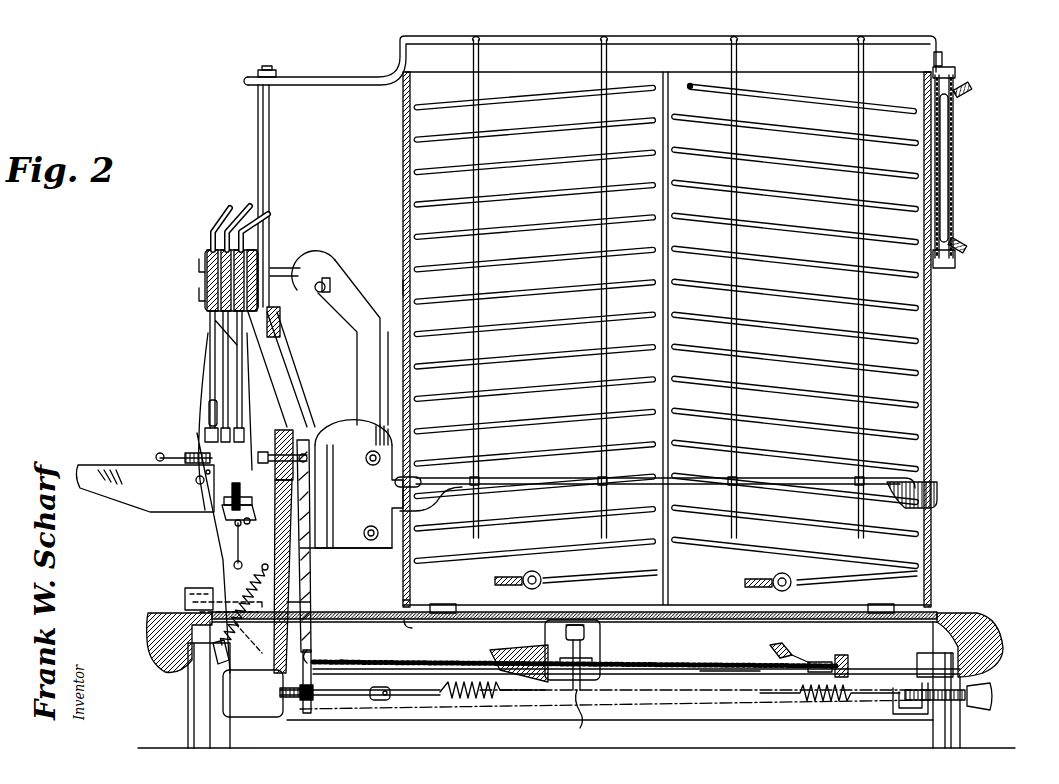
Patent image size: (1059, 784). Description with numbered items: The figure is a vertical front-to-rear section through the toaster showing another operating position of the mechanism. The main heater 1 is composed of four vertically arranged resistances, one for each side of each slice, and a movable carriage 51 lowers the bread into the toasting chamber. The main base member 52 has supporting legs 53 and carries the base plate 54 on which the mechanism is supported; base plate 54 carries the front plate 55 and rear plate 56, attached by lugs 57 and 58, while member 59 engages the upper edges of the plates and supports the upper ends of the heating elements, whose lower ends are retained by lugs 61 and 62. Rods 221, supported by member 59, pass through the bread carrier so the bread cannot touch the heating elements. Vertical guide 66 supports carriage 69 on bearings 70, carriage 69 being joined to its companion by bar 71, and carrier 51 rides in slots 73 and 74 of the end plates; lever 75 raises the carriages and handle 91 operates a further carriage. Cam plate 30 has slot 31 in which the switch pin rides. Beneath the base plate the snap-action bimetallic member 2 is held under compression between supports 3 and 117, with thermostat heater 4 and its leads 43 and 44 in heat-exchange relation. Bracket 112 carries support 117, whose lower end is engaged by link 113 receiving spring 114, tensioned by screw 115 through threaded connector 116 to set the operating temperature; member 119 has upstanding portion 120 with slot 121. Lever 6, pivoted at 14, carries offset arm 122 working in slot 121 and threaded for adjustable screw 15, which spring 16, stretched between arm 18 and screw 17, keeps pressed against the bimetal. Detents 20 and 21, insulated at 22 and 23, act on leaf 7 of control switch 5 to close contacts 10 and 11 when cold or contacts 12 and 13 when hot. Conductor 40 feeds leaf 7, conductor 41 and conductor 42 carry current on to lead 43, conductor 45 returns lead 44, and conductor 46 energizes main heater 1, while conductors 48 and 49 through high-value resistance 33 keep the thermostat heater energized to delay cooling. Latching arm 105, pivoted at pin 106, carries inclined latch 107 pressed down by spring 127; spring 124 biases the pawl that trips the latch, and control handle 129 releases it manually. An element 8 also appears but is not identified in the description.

The main heater 1 is at (906, 343).
The bimetallic member 2 is at (688, 668).
The support 3 is at (850, 664).
The thermostat heater 4 is at (730, 654).
The control switch 5 is at (207, 251).
The lever 6 is at (512, 653).
The leaf 7 is at (218, 340).
The valve stem 8 is at (240, 372).
The contact 10 is at (205, 436).
The contact 11 is at (203, 400).
The contact 12 is at (258, 369).
The contact 13 is at (250, 434).
The pivot 14 is at (353, 693).
The adjustable screw 15 is at (585, 636).
The spring 16 is at (230, 614).
The screw 17 is at (309, 546).
The arm 18 is at (231, 676).
The detent 20 is at (258, 517).
The detent 21 is at (228, 514).
The insulation 22 is at (226, 492).
The insulation 23 is at (241, 500).
The cam plate 30 is at (327, 262).
The slot 31 is at (371, 333).
The resistance 33 is at (941, 168).
The conductor 40 is at (249, 206).
The conductor 41 is at (227, 207).
The conductor 42 is at (342, 646).
The lead 43 is at (320, 657).
The lead 44 is at (816, 661).
The conductor 45 is at (805, 655).
The conductor 46 is at (273, 217).
The conductor 48 is at (969, 89).
The conductor 49 is at (964, 243).
The carriage 51 is at (912, 482).
The main base member 52 is at (993, 634).
The supporting legs 53 is at (195, 700).
The base plate 54 is at (941, 618).
The front plate 55 is at (406, 148).
The rear plate 56 is at (941, 59).
The lug 57 is at (410, 624).
The lug 58 is at (921, 654).
The member 59 is at (670, 43).
The lug 61 is at (883, 605).
The lug 62 is at (450, 604).
The vertical guide 66 is at (266, 136).
The carriage 69 is at (346, 566).
The bearings 70 is at (281, 322).
The bar 71 is at (369, 526).
The slot 73 is at (404, 287).
The slot 74 is at (928, 393).
The lever 75 is at (346, 437).
The handle 91 is at (108, 464).
The arm 105 is at (208, 428).
The pin 106 is at (200, 592).
The inclined latch 107 is at (232, 562).
The bracket 112 is at (301, 576).
The link 113 is at (388, 712).
The spring 114 is at (470, 705).
The screw 115 is at (991, 697).
The threaded connector 116 is at (910, 717).
The support 117 is at (310, 603).
The member 119 is at (810, 720).
The upstanding portion 120 is at (592, 661).
The slot 121 is at (582, 720).
The offset arm 122 is at (584, 657).
The spring 124 is at (236, 544).
The spring 127 is at (196, 482).
The control handle 129 is at (158, 453).
The rods 221 is at (602, 43).